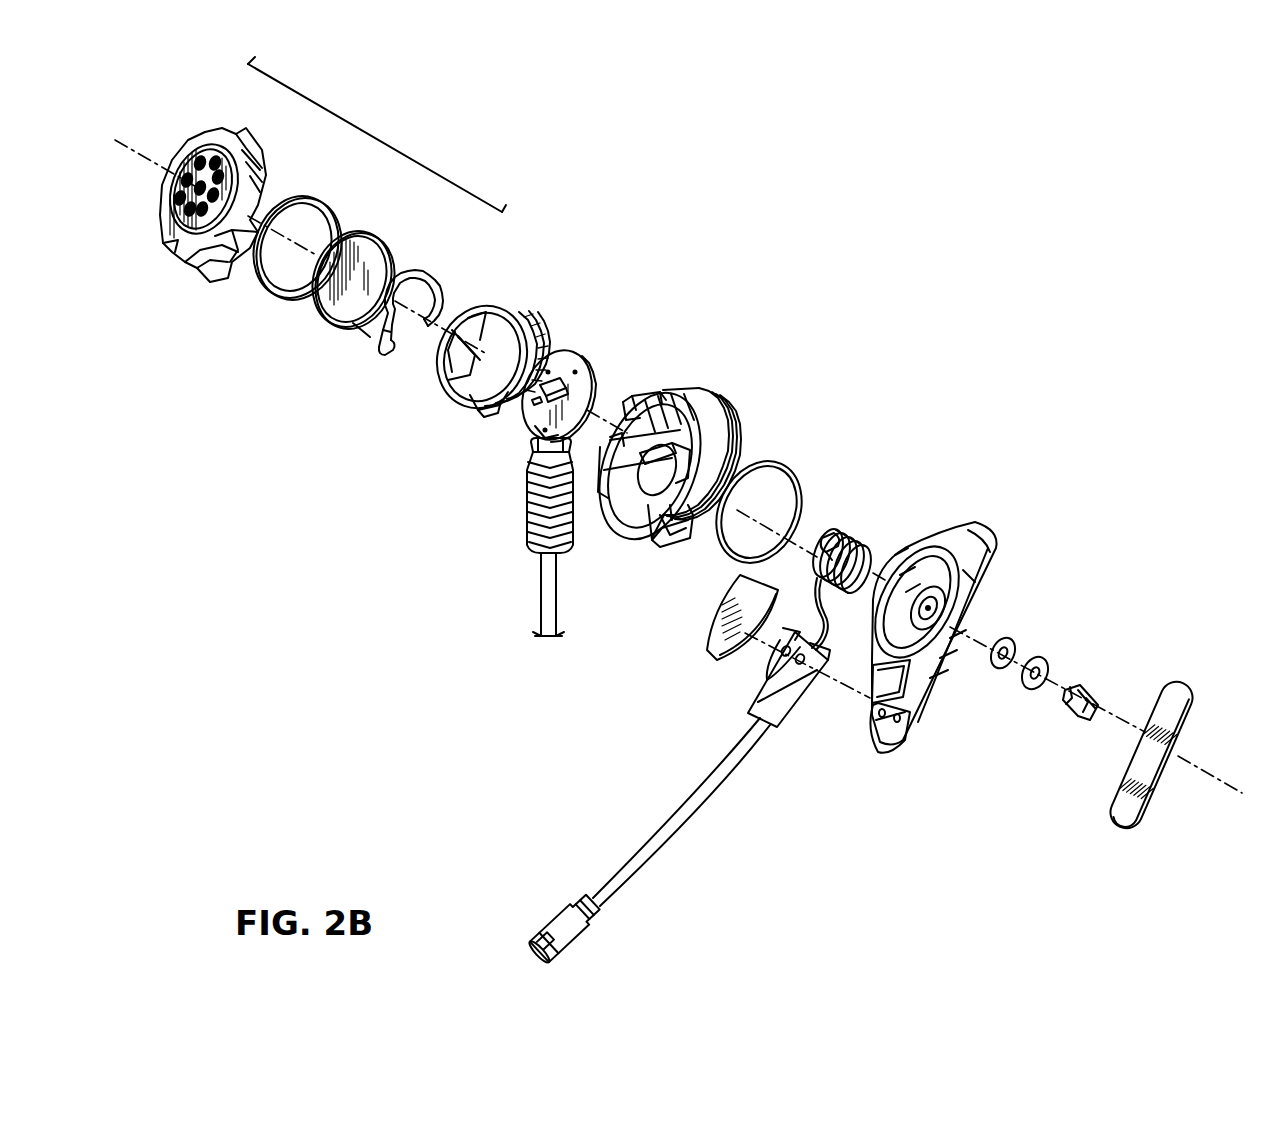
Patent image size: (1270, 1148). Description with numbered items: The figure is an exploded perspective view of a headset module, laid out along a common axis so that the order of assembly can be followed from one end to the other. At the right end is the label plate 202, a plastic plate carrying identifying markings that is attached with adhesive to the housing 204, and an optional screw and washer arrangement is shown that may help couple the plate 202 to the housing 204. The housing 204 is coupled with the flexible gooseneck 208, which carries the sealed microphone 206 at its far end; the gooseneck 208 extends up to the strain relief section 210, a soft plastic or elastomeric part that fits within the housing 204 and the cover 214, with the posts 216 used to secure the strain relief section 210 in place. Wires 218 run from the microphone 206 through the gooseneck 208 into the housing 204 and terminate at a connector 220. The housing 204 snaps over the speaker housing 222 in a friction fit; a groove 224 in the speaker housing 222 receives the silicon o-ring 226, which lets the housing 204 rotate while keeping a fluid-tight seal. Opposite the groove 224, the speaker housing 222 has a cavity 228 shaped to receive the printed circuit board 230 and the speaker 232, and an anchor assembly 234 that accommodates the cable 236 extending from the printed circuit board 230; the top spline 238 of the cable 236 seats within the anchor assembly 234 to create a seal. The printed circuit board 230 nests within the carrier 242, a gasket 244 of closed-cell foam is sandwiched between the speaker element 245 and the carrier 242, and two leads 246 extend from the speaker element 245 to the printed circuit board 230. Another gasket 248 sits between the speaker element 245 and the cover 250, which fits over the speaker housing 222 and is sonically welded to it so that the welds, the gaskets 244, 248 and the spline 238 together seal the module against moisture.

The label plate 202 is at (1125, 802).
The housing 204 is at (995, 525).
The sealed microphone 206 is at (574, 904).
The flexible gooseneck 208 is at (682, 810).
The strain relief section 210 is at (750, 712).
The cover 214 is at (718, 642).
The posts 216 is at (875, 750).
The wires 218 is at (868, 532).
The connector 220 is at (836, 530).
The speaker housing 222 is at (690, 397).
The groove 224 is at (726, 436).
The silicon o-ring 226 is at (785, 460).
The cavity 228 is at (640, 392).
The printed circuit board 230 is at (578, 352).
The speaker 232 is at (325, 109).
The anchor assembly 234 is at (680, 548).
The cable 236 is at (528, 503).
The top spline 238 is at (528, 446).
The carrier 242 is at (507, 307).
The gasket 244 is at (432, 272).
The speaker element 245 is at (375, 228).
The leads 246 is at (382, 356).
The gasket 248 is at (328, 200).
The cover 250 is at (246, 144).